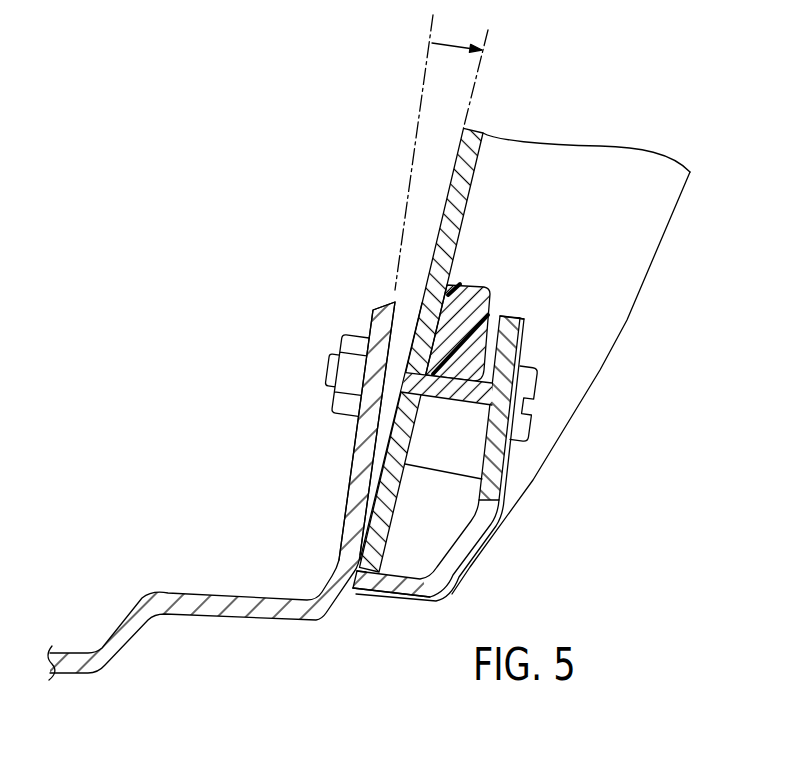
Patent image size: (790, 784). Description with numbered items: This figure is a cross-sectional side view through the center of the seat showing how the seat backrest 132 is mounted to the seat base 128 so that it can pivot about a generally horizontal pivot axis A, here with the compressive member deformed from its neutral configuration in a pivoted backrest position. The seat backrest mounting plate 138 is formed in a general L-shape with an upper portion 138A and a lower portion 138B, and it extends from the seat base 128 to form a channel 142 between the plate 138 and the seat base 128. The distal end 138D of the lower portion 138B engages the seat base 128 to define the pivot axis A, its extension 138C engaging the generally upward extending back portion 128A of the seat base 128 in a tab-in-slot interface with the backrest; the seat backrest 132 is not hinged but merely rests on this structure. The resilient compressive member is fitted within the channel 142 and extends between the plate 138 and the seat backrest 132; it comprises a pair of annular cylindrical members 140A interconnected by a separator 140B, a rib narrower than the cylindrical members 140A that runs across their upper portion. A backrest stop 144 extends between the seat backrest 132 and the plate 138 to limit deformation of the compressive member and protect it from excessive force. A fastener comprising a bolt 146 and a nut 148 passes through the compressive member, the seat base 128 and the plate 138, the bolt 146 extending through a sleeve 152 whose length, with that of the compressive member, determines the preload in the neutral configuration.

The seat base 128 is at (222, 618).
The upward extending back portion 128A is at (363, 457).
The seat backrest 132 is at (458, 182).
The channel 142 is at (503, 222).
The sleeve 152 is at (404, 350).
The seat backrest mounting plate 138 is at (517, 495).
The upper portion 138A is at (523, 347).
The lower portion 138B is at (409, 597).
The extension 138C is at (362, 580).
The distal end 138D is at (357, 570).
The cylindrical member 140A is at (440, 478).
The separator 140B is at (490, 290).
The backrest stop 144 is at (450, 430).
The bolt 146 is at (530, 427).
The nut 148 is at (336, 404).
The pivot axis A is at (359, 611).